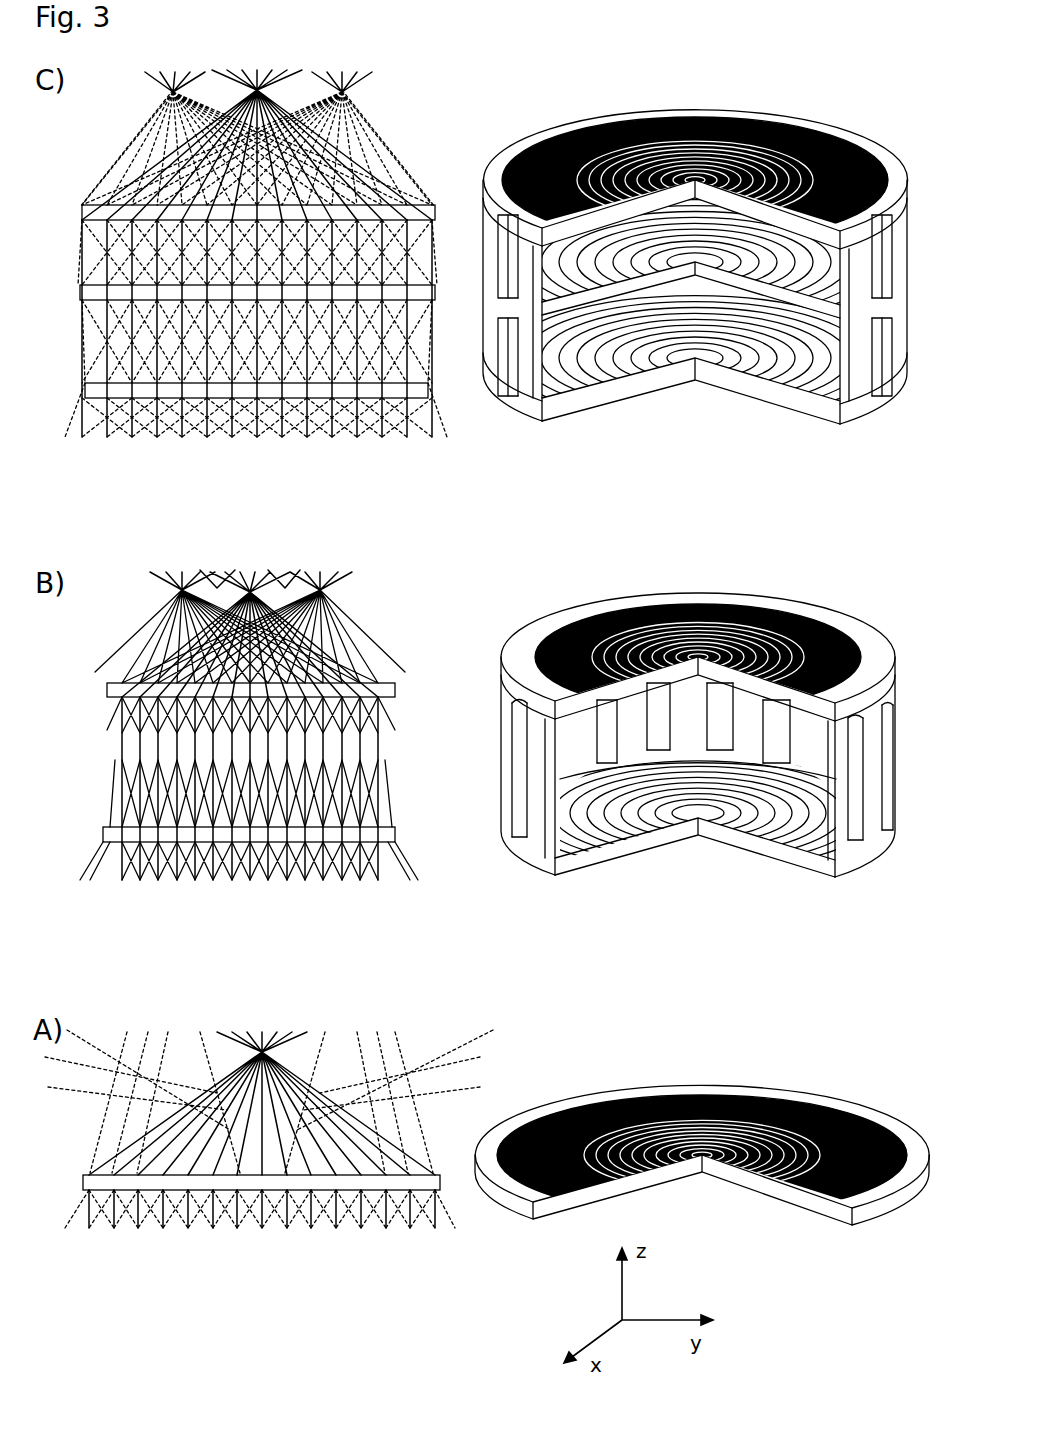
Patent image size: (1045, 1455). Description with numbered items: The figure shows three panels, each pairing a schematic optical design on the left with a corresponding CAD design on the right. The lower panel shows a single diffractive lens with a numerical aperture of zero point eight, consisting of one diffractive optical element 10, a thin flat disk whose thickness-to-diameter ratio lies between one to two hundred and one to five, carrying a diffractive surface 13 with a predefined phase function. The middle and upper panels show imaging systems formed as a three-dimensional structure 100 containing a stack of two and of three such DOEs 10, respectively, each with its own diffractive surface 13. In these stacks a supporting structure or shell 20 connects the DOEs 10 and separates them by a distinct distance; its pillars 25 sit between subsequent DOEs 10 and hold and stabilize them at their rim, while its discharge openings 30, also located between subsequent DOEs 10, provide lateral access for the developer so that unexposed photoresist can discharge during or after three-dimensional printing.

The diffractive optical element 10 is at (750, 845).
The diffractive surface 13 is at (848, 1107).
The supporting structure 20 is at (491, 759).
The pillars 25 is at (533, 828).
The discharge openings 30 is at (890, 793).
The 3D-structure 100 is at (720, 574).